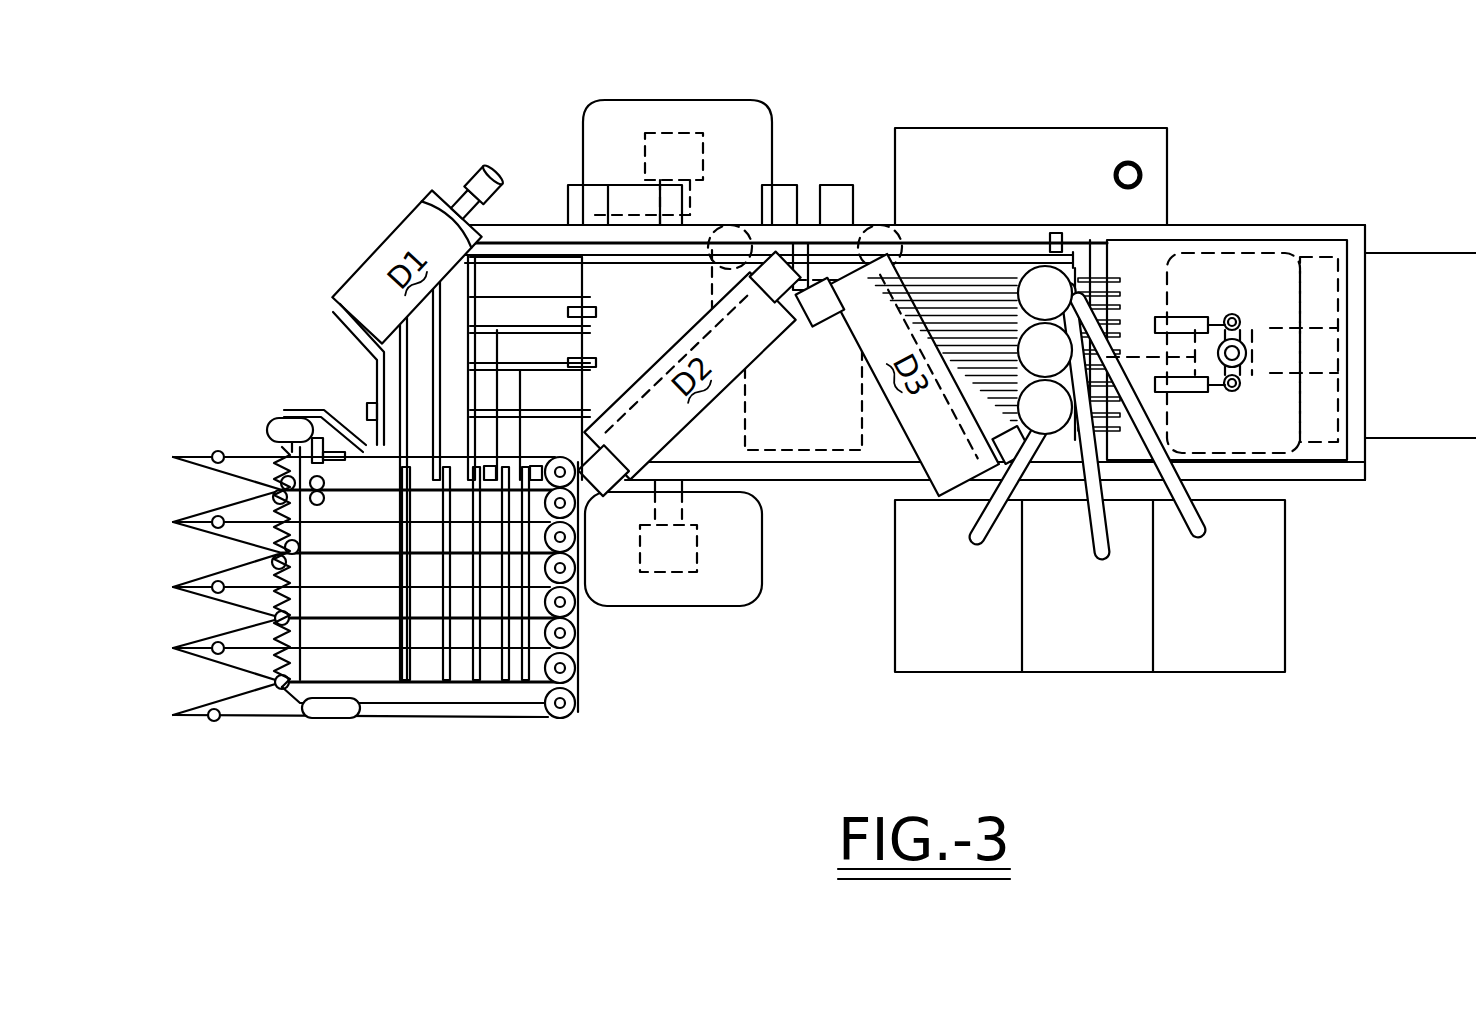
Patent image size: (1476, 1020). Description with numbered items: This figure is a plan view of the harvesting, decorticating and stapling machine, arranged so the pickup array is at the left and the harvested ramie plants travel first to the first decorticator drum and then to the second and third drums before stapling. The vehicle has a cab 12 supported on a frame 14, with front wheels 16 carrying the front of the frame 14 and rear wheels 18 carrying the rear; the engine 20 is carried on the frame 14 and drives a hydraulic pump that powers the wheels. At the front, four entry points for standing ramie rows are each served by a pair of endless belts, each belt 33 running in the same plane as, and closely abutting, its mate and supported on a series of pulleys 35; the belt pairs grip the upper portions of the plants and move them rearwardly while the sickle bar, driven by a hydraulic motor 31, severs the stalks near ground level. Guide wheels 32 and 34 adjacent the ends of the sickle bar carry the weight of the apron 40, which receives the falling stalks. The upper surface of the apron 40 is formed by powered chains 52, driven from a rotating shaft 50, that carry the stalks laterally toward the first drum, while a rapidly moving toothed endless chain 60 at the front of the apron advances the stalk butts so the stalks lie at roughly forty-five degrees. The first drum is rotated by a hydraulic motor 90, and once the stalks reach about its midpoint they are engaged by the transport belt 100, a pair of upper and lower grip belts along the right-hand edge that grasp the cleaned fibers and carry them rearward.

The cab 12 is at (705, 230).
The frame 14 is at (1360, 225).
The front wheels 16 is at (662, 100).
The rear wheels 18 is at (1237, 255).
The engine 20 is at (800, 445).
The hydraulic motor 31 is at (344, 438).
The guide wheel 32 is at (332, 718).
The belt 33 is at (245, 455).
The guide wheel 34 is at (268, 435).
The pulleys 35 is at (565, 715).
The apron 40 is at (432, 685).
The rotating shaft 50 is at (490, 478).
The chains 52 is at (405, 682).
The endless chain 60 is at (368, 408).
The hydraulic motor 90 is at (483, 185).
The transport belt 100 is at (617, 358).